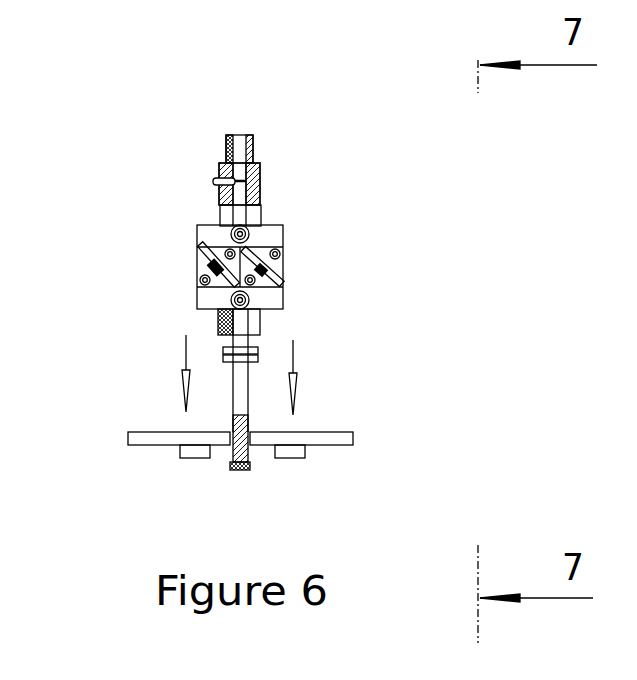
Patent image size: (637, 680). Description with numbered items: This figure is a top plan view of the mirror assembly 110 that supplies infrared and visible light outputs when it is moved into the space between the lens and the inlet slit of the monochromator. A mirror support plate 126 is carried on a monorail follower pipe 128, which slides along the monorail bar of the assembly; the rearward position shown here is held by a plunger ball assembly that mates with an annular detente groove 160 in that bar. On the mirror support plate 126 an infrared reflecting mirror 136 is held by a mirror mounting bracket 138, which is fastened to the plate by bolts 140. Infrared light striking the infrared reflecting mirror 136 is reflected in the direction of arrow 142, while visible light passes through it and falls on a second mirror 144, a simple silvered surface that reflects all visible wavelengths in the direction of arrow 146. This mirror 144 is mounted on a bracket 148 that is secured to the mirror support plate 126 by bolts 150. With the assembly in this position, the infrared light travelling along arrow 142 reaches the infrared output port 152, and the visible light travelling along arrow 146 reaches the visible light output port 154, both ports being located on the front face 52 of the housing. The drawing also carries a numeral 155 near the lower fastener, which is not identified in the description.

The mirror assembly 110 is at (190, 83).
The annular detente groove 160 is at (243, 178).
The monorail follower pipe 128 is at (263, 213).
The mirror support plate 126 is at (198, 228).
The bracket 148 is at (263, 242).
The bolts 140 is at (213, 240).
The infrared reflecting mirror 136 is at (205, 260).
The bolts 150 is at (283, 253).
The mirror 144 is at (285, 298).
The mirror mounting bracket 138 is at (203, 305).
The arrow 142 is at (186, 362).
The arrow 146 is at (293, 362).
The front face 52 is at (343, 447).
The infrared output port 152 is at (202, 460).
The visible light output port 154 is at (297, 460).
The nut 155 is at (237, 472).